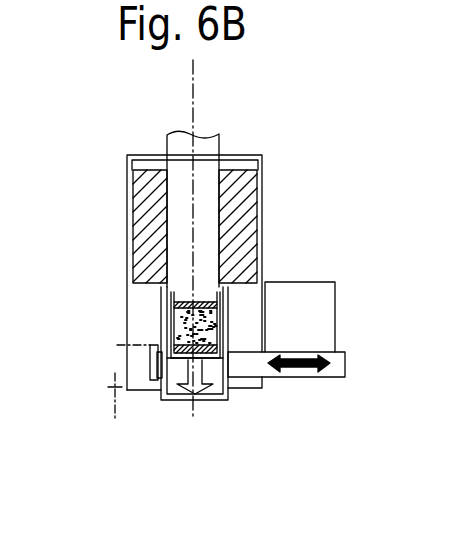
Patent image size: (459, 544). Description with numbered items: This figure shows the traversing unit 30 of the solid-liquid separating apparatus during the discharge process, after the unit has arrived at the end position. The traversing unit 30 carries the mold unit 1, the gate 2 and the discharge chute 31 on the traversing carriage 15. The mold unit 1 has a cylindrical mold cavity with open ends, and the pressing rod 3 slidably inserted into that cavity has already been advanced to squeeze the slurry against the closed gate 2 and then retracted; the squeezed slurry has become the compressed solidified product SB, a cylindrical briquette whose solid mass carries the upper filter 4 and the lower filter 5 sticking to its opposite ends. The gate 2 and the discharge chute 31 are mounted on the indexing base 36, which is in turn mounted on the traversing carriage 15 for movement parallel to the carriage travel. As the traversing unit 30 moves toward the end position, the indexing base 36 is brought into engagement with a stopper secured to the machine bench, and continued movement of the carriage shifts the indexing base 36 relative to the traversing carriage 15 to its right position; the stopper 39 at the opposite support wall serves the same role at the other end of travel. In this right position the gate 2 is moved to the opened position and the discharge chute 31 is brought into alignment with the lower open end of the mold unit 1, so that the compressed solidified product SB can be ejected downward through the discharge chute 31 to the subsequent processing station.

The traversing unit 30 is at (100, 179).
The mold unit 1 is at (247, 197).
The pressing rod 3 is at (213, 148).
The traversing carriage 15 is at (253, 308).
The gate 2 is at (303, 293).
The indexing base 36 is at (250, 368).
The discharge chute 31 is at (178, 402).
The upper filter 4 is at (188, 300).
The compressed solidified product SB is at (164, 330).
The lower filter 5 is at (160, 365).
The stopper 39 is at (115, 418).